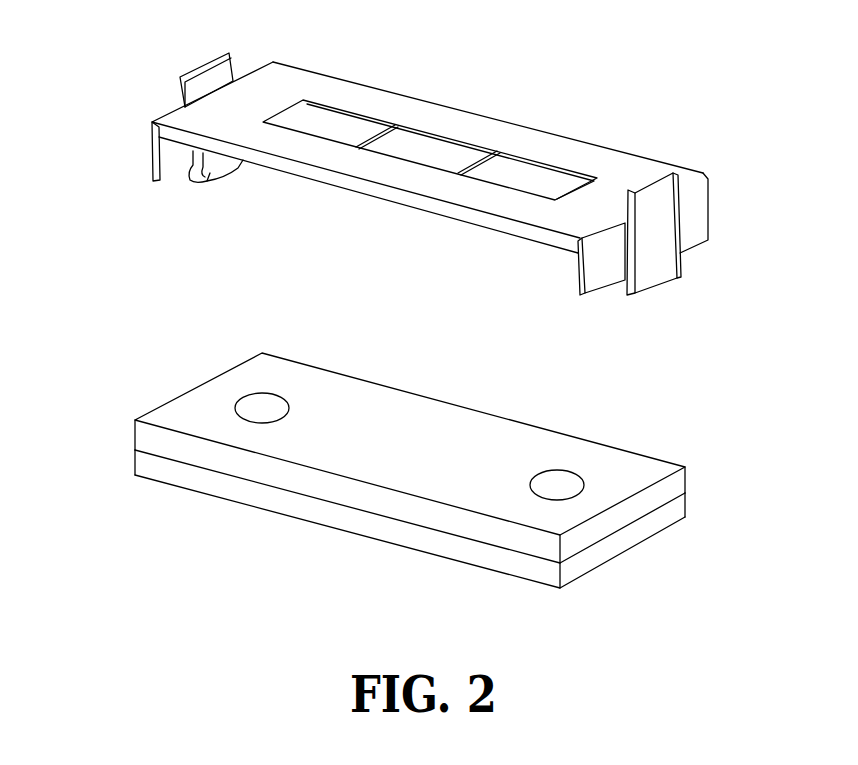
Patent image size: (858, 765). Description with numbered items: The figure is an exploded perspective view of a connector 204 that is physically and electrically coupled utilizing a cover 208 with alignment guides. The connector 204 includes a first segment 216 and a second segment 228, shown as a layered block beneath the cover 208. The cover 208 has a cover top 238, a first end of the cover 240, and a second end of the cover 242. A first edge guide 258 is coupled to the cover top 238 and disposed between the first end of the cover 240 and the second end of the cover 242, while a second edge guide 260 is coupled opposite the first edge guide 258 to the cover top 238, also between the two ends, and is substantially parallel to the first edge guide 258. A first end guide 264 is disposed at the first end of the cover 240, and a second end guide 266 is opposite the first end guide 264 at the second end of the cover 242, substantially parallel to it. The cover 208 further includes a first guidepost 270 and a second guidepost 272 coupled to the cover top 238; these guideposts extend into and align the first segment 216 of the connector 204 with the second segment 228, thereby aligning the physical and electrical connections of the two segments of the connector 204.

The cover 208 is at (438, 189).
The first edge guide 258 is at (362, 84).
The cover top 238 is at (557, 136).
The second edge guide 260 is at (295, 165).
The first end of the cover 240 is at (145, 108).
The first end guide 264 is at (150, 165).
The first guidepost 270 is at (230, 173).
The second end of the cover 242 is at (660, 264).
The second end guide 266 is at (603, 296).
The second guidepost 272 is at (574, 251).
The connector 204 is at (388, 476).
The second segment 228 is at (347, 520).
The first segment 216 is at (467, 527).